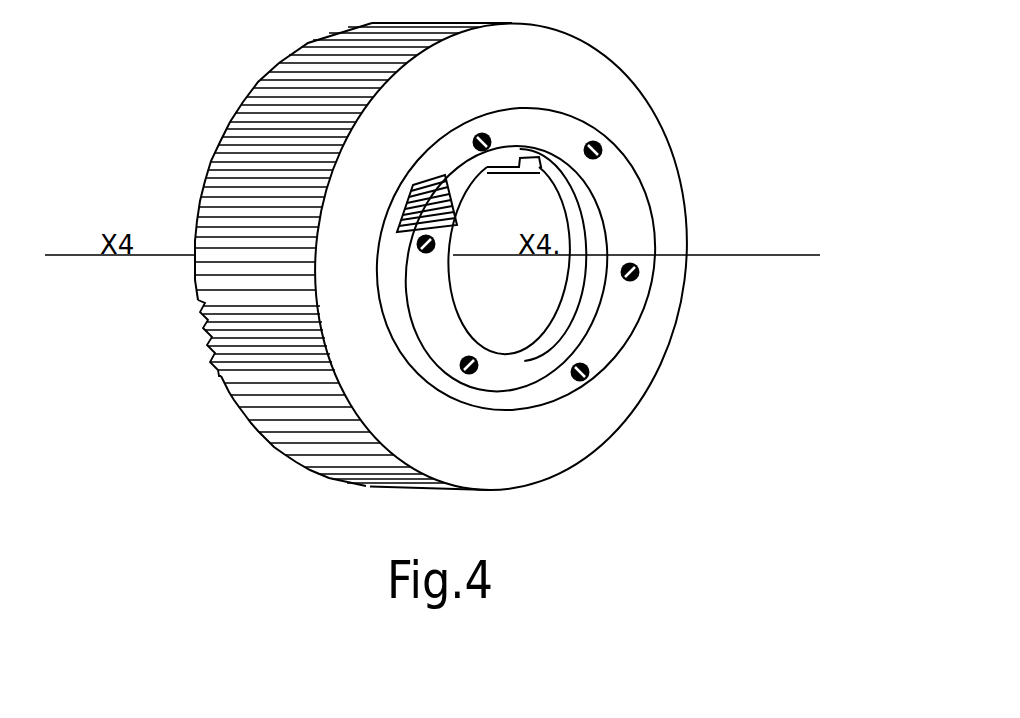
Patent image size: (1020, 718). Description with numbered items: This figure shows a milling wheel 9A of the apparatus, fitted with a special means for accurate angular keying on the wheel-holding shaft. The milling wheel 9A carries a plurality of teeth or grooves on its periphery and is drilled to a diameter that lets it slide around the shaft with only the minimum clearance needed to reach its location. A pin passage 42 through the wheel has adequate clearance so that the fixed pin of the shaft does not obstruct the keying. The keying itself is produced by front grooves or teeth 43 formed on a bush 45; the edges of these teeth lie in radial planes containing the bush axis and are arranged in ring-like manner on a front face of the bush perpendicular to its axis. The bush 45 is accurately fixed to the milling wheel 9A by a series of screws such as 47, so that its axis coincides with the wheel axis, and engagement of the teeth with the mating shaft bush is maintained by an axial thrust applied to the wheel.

The milling wheel 9A is at (672, 92).
The pin passage 42 is at (522, 198).
The front grooves or teeth 43 is at (441, 170).
The bush 45 is at (536, 383).
The screw 47 is at (592, 380).